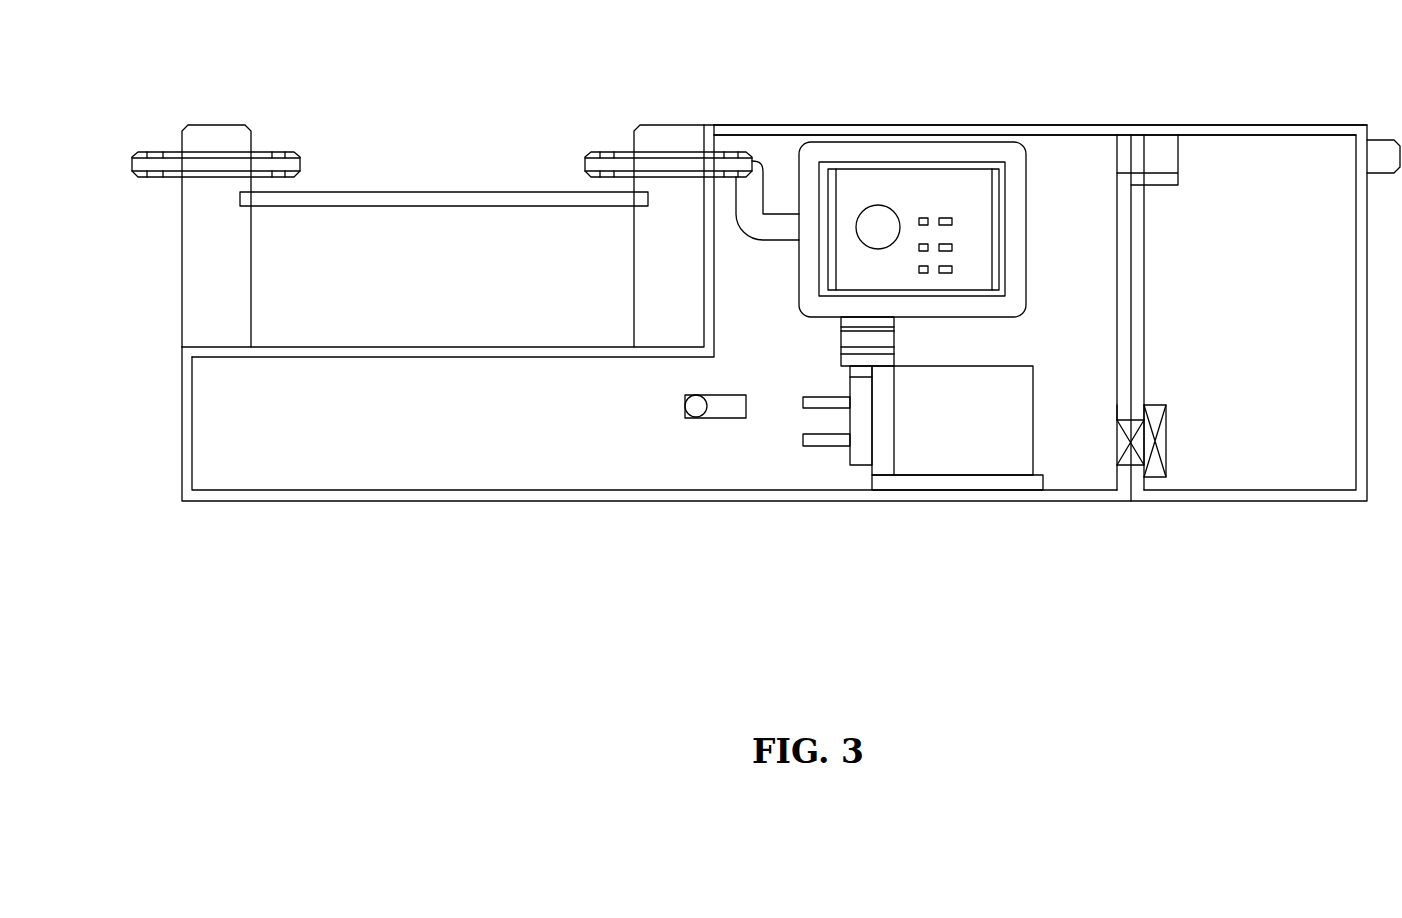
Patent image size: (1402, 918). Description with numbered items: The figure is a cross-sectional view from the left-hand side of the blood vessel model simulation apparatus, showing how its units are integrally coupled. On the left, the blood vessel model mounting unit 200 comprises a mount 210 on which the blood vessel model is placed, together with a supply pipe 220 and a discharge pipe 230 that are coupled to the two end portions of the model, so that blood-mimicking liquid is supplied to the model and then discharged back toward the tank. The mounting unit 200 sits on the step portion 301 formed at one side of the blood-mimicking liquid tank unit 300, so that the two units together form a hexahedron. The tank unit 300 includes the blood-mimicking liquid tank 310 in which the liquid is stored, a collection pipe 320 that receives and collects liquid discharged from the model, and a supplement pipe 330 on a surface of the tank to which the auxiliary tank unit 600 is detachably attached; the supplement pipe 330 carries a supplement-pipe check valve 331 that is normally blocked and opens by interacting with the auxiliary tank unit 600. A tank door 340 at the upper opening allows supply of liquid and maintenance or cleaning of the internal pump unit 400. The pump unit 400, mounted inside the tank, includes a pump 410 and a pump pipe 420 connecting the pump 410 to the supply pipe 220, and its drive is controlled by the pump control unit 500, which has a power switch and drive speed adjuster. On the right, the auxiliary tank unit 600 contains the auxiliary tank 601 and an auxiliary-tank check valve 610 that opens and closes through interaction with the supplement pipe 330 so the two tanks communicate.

The blood vessel model mounting unit 200 is at (442, 207).
The mount 210 is at (349, 192).
The supply pipe 220 is at (603, 152).
The discharge pipe 230 is at (281, 156).
The blood-mimicking liquid tank unit 300 is at (774, 328).
The step portion 301 is at (293, 350).
The blood-mimicking liquid tank 310 is at (392, 502).
The collection pipe 320 is at (721, 410).
The supplement pipe 330 is at (1130, 414).
The supplement-pipe check valve 331 is at (1119, 443).
The tank door 340 is at (1285, 125).
The pump unit 400 is at (923, 440).
The pump 410 is at (977, 444).
The pump pipe 420 is at (762, 228).
The pump control unit 500 is at (960, 157).
The auxiliary tank unit 600 is at (1220, 364).
The auxiliary tank 601 is at (1145, 289).
The auxiliary-tank check valve 610 is at (1194, 441).